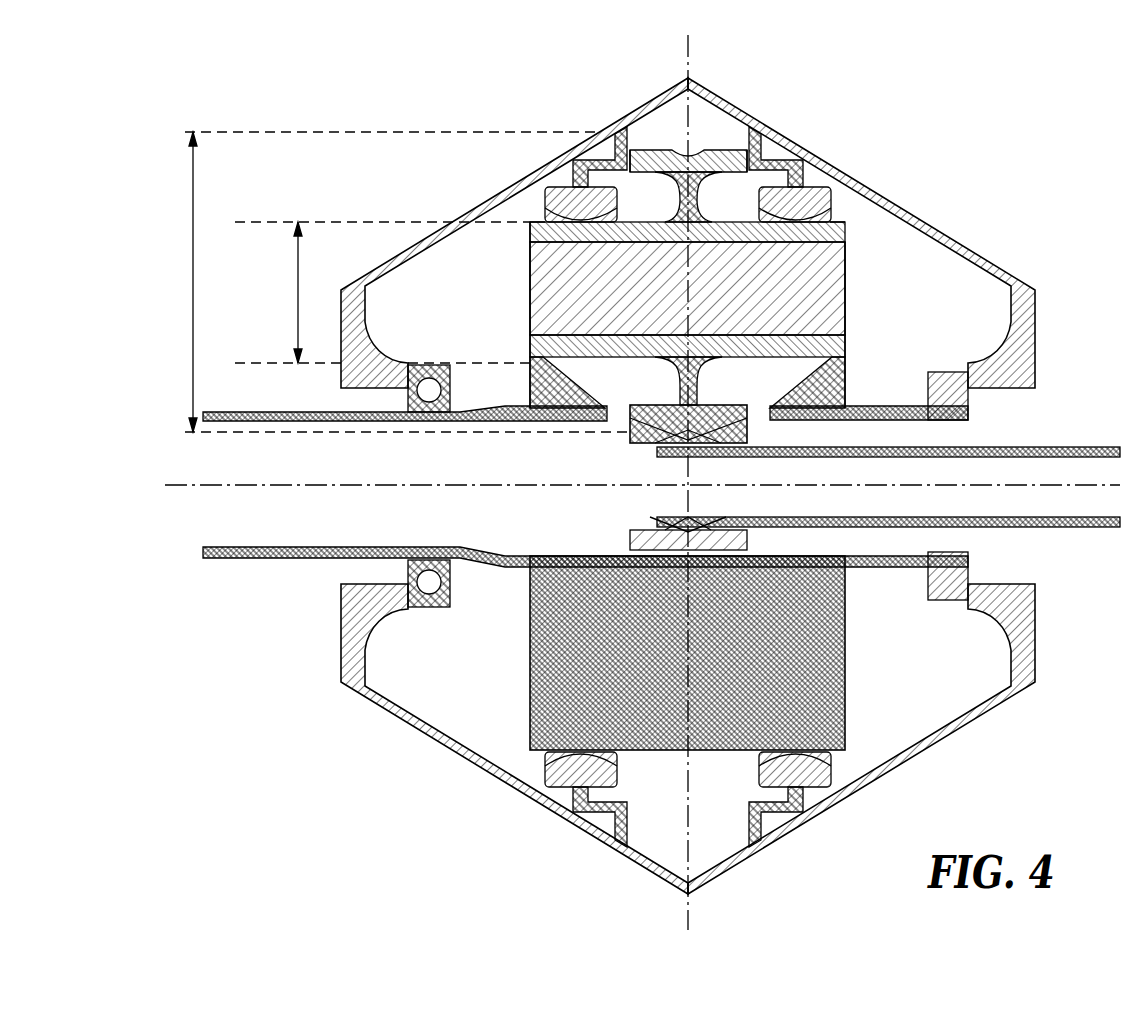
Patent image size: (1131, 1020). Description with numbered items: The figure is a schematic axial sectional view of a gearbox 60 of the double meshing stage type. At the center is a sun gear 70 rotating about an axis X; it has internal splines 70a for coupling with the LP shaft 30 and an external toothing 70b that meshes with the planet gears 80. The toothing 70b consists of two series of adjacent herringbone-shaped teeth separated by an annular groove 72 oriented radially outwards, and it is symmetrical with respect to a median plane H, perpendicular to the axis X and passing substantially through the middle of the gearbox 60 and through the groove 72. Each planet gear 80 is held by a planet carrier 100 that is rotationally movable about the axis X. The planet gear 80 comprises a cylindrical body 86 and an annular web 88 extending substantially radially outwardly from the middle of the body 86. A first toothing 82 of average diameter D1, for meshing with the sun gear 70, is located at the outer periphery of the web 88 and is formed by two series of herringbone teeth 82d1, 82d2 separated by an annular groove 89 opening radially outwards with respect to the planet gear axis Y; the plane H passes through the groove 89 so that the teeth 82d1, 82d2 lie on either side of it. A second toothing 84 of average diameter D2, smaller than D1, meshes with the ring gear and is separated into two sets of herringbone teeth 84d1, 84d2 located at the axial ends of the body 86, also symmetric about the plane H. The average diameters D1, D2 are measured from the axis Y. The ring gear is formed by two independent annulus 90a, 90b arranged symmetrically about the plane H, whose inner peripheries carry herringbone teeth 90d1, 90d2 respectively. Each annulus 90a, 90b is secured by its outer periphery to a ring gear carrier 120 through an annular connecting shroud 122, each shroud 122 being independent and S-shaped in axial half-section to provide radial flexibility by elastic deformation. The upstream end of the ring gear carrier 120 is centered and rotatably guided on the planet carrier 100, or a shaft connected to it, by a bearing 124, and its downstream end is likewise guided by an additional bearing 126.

The LP shaft 30 is at (1088, 447).
The gearbox 60 is at (1097, 72).
The sun gear 70 is at (660, 445).
The internal splines 70a is at (712, 446).
The external toothing 70b is at (745, 548).
The annular groove 72 is at (690, 447).
The planet gear 80 is at (850, 338).
The first toothing 82 is at (713, 403).
The herringbone teeth 82d1 is at (645, 150).
The herringbone teeth 82d2 is at (702, 143).
The second toothing 84 is at (845, 358).
The herringbone teeth 84d1 is at (530, 320).
The herringbone teeth 84d2 is at (807, 382).
The cylindrical body 86 is at (530, 262).
The annular web 88 is at (684, 386).
The annular groove 89 is at (728, 150).
The annulus 90a is at (560, 186).
The annulus 90b is at (832, 195).
The herringbone-shaped teeth 90d1 is at (545, 222).
The herringbone-shaped teeth 90d2 is at (845, 234).
The planet carrier 100 is at (1013, 773).
The ring gear carrier 120 is at (992, 186).
The annular connecting shroud 122 is at (858, 140).
The bearing 124 is at (413, 421).
The additional bearing 126 is at (970, 395).
The average diameter D1 is at (193, 283).
The average diameter D2 is at (298, 296).
The median plane H is at (695, 52).
The axis of rotation X is at (178, 487).
The axis of the planet gear Y is at (850, 306).